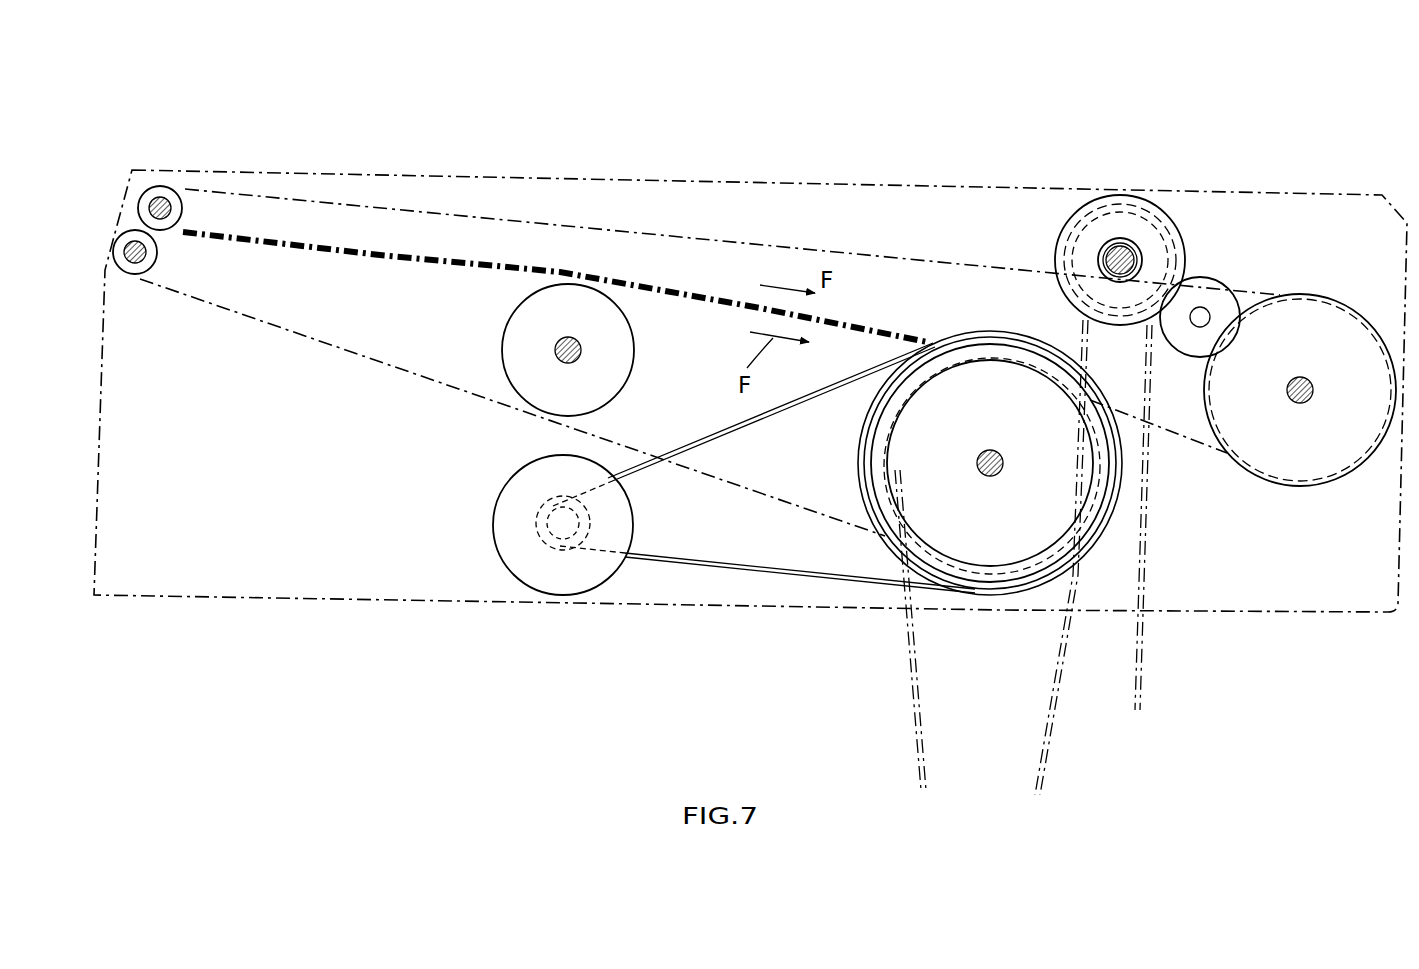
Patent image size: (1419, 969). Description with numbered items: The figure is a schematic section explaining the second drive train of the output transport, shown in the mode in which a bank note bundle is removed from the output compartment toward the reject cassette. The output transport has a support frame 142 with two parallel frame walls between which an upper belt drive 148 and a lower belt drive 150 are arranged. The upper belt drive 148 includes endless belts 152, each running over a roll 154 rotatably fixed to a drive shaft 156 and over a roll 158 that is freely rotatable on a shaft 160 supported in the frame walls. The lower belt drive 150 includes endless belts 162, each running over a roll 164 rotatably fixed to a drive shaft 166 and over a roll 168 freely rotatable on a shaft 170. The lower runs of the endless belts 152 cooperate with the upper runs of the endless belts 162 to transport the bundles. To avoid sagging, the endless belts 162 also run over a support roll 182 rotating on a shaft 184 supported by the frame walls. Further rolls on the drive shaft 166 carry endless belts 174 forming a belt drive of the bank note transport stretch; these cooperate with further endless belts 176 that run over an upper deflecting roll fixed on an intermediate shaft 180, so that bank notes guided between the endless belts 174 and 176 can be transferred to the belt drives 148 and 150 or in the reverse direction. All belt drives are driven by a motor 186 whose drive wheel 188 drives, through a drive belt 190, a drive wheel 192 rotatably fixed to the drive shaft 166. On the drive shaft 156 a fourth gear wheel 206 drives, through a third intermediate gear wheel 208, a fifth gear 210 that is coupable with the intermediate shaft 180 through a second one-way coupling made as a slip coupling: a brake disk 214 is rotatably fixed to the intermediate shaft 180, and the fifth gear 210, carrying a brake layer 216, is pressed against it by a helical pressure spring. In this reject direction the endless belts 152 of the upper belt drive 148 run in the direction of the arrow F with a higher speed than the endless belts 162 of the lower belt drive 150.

The support frame 142 is at (627, 178).
The upper belt drive 148 is at (736, 243).
The lower belt drive 150 is at (430, 395).
The endless belt 152 is at (438, 212).
The roll 154 is at (1335, 318).
The drive shaft 156 is at (1300, 404).
The roll 158 is at (178, 193).
The shaft 160 is at (158, 198).
The endless belt 162 is at (332, 343).
The roll 164 is at (898, 472).
The drive shaft 166 is at (990, 450).
The roll 168 is at (150, 252).
The shaft 170 is at (128, 270).
The endless belt 174 is at (910, 692).
The endless belt 176 is at (1146, 660).
The intermediate shaft 180 is at (1098, 244).
The support roll 182 is at (505, 345).
The shaft 184 is at (583, 356).
The motor 186 is at (498, 526).
The drive wheel 188 is at (560, 522).
The drive belt 190 is at (708, 568).
The drive wheel 192 is at (878, 430).
The fourth gear wheel 206 is at (1292, 300).
The third intermediate gear wheel 208 is at (1210, 283).
The fifth gear 210 is at (1140, 205).
The brake disk 214 is at (1110, 250).
The brake layer 216 is at (1118, 246).